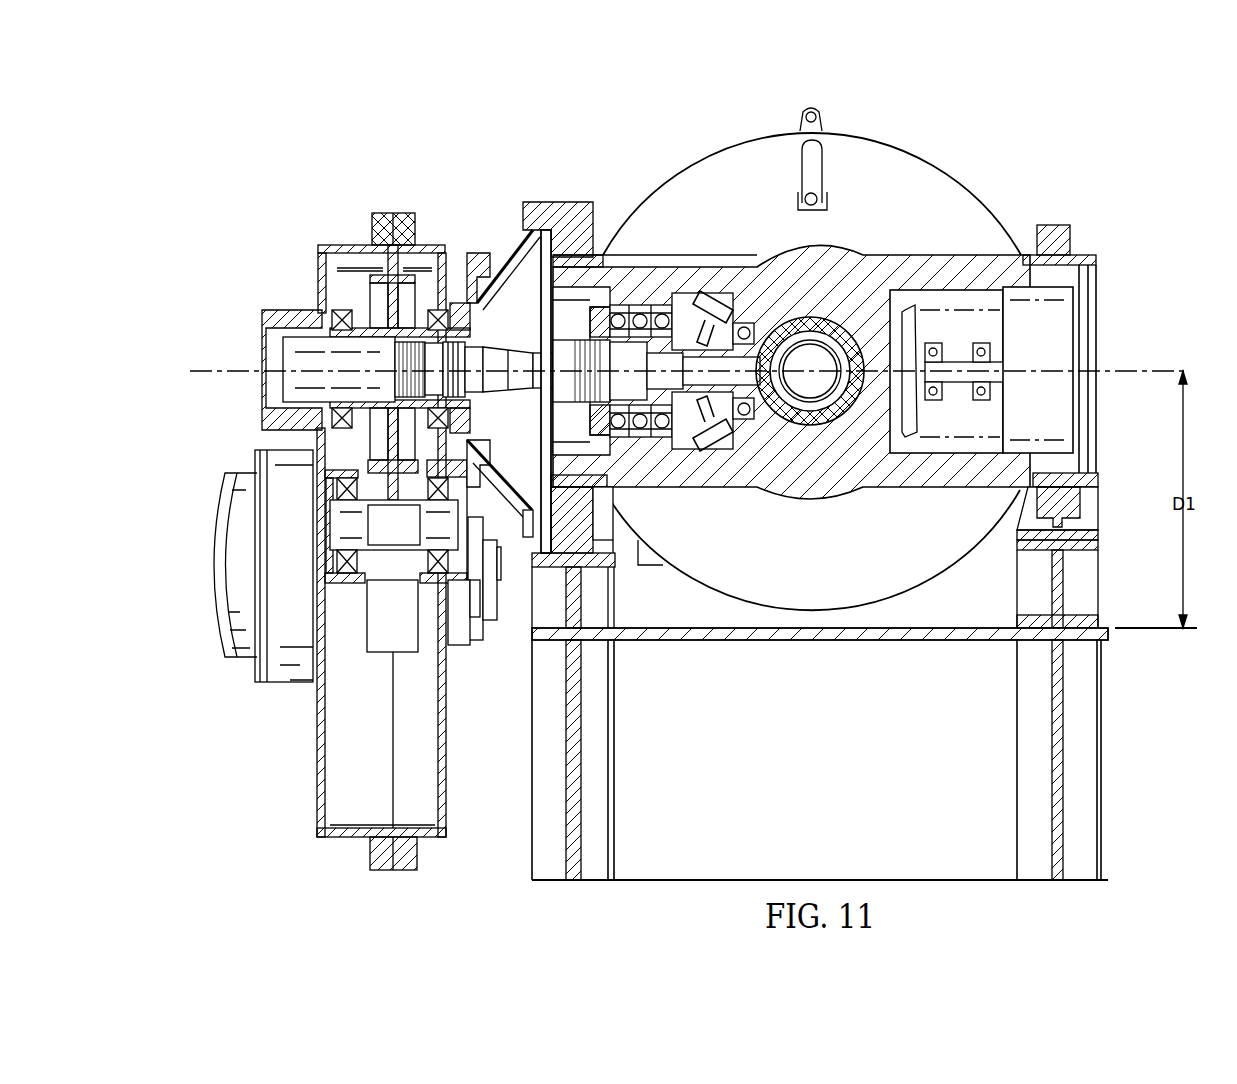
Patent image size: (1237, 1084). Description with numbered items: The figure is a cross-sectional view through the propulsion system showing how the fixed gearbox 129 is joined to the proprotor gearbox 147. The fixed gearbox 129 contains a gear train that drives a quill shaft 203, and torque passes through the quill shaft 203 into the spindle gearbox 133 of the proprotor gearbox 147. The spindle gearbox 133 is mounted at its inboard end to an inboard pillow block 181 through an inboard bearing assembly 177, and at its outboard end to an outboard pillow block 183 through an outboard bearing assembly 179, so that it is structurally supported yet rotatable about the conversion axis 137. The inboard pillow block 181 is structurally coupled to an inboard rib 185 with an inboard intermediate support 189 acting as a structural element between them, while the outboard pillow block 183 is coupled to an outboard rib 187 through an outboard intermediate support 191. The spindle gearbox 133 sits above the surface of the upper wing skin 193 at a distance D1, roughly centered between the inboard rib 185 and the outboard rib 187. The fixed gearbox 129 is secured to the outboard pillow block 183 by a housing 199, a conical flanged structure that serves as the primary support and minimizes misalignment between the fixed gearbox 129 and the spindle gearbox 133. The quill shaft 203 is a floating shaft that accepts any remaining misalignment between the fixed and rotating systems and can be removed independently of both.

The fixed gearbox 129 is at (352, 245).
The spindle gearbox 133 is at (917, 253).
The conversion axis 137 is at (1143, 371).
The proprotor gearbox 147 is at (974, 150).
The inboard bearing assembly 177 is at (1050, 243).
The outboard bearing assembly 179 is at (573, 243).
The inboard pillow block 181 is at (1085, 507).
The outboard pillow block 183 is at (585, 200).
The inboard rib 185 is at (1095, 862).
The outboard rib 187 is at (535, 858).
The inboard intermediate support 189 is at (1085, 580).
The outboard intermediate support 191 is at (605, 597).
The upper wing skin 193 is at (960, 628).
The housing 199 is at (507, 262).
The quill shaft 203 is at (493, 343).